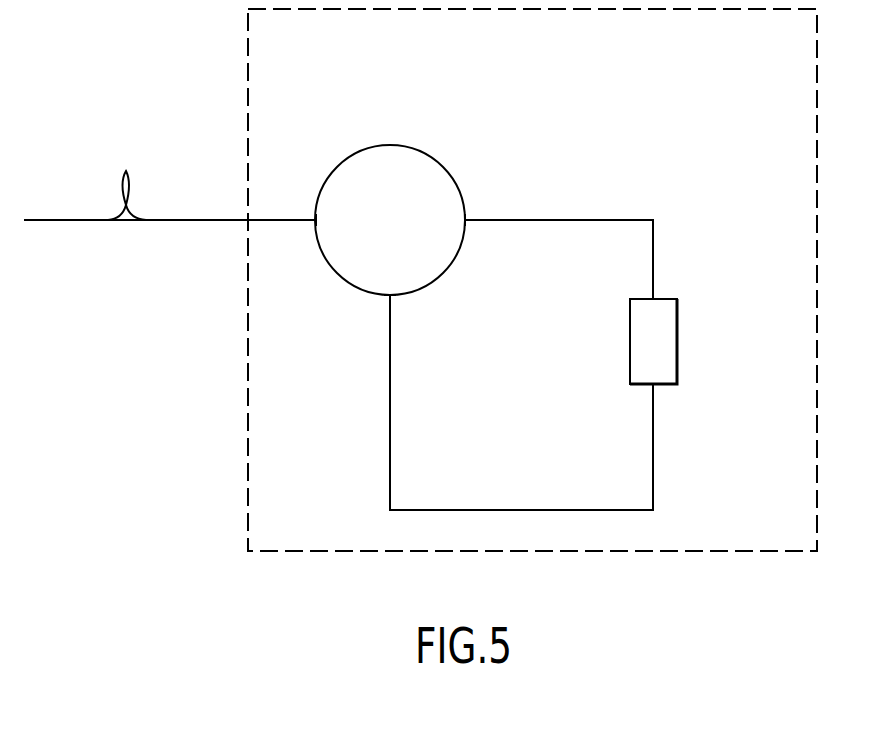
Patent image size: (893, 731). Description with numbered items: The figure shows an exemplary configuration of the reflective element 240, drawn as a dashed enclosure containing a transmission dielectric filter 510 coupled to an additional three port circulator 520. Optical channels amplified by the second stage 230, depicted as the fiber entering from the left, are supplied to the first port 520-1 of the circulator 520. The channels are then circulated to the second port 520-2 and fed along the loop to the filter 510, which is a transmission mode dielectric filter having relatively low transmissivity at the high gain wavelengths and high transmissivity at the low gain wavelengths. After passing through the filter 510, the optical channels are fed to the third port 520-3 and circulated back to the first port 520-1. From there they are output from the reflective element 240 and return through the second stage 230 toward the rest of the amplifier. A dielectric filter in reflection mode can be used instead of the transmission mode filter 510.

The second stage 230 is at (127, 168).
The reflective element 240 is at (677, 551).
The transmission dielectric filter 510 is at (678, 333).
The three port circulator 520 is at (413, 145).
The first port 520-1 is at (316, 220).
The second port 520-2 is at (467, 221).
The third port 520-3 is at (391, 296).